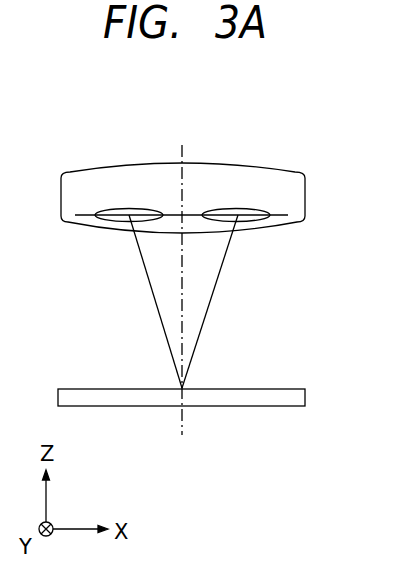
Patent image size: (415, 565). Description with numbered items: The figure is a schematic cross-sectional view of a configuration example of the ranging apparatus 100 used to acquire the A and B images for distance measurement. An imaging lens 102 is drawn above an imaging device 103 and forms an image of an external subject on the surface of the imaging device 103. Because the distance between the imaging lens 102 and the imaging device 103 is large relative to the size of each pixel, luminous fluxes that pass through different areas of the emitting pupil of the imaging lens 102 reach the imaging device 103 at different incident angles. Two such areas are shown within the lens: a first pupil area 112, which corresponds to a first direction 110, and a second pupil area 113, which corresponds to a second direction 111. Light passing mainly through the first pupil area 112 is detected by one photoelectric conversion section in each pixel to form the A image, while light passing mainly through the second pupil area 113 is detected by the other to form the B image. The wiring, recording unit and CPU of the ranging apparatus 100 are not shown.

The ranging apparatus 100 is at (226, 160).
The imaging lens 102 is at (305, 193).
The imaging device 103 is at (245, 397).
The first direction 110 is at (222, 265).
The second direction 111 is at (157, 309).
The first pupil area 112 is at (240, 208).
The second pupil area 113 is at (118, 208).